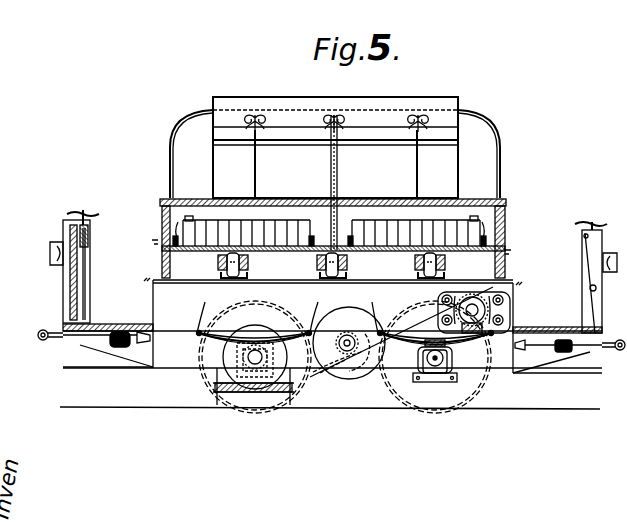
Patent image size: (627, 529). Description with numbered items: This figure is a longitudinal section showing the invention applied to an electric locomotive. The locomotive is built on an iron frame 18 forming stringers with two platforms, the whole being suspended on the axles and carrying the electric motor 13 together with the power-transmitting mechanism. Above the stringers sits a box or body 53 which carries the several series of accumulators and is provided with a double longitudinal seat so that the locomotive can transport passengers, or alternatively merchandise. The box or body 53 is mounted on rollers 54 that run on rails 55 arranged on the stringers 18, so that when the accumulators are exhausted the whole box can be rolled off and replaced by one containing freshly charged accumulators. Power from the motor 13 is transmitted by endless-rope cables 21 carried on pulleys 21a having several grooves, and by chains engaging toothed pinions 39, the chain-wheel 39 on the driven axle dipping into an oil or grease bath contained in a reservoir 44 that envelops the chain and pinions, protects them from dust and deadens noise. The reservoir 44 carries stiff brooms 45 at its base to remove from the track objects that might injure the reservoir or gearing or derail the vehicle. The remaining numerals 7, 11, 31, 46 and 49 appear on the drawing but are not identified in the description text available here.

The battery cells 7 is at (230, 228).
The controller 11 is at (70, 284).
The electric motor 13 is at (498, 340).
The iron frame 18 is at (175, 281).
The endless-rope cables 21 is at (370, 312).
The pulleys 21a is at (425, 309).
The battery terminal 31 is at (332, 225).
The toothed pinions 39 is at (273, 352).
The reservoir 44 is at (335, 375).
The stiff brooms 45 is at (215, 397).
The wheel 46 is at (203, 372).
The battery connector 49 is at (332, 236).
The box or body 53 is at (506, 223).
The rollers 54 is at (248, 264).
The rails 55 is at (345, 318).